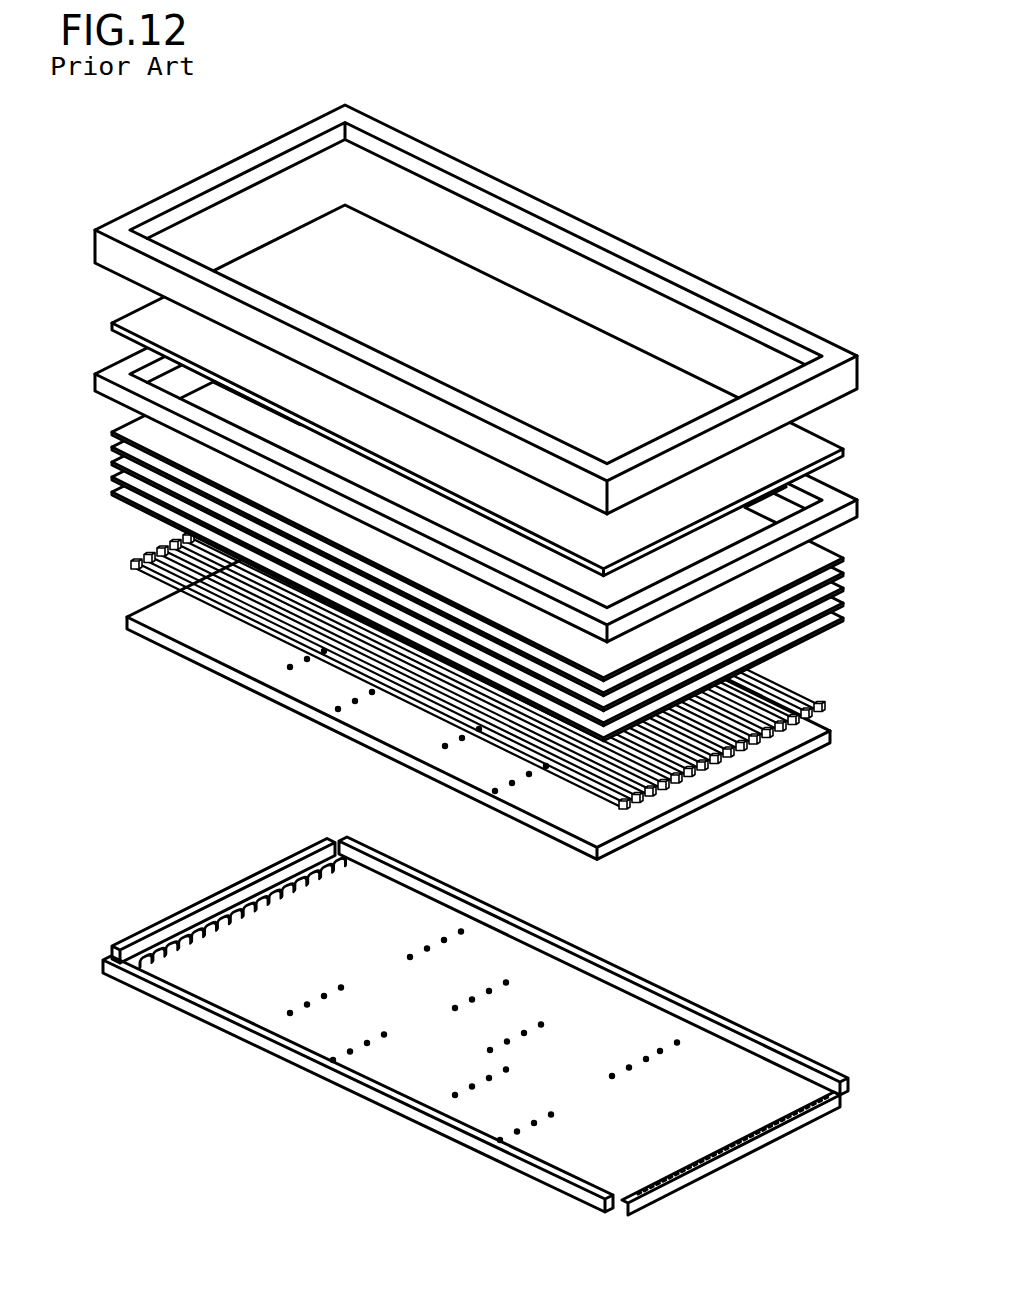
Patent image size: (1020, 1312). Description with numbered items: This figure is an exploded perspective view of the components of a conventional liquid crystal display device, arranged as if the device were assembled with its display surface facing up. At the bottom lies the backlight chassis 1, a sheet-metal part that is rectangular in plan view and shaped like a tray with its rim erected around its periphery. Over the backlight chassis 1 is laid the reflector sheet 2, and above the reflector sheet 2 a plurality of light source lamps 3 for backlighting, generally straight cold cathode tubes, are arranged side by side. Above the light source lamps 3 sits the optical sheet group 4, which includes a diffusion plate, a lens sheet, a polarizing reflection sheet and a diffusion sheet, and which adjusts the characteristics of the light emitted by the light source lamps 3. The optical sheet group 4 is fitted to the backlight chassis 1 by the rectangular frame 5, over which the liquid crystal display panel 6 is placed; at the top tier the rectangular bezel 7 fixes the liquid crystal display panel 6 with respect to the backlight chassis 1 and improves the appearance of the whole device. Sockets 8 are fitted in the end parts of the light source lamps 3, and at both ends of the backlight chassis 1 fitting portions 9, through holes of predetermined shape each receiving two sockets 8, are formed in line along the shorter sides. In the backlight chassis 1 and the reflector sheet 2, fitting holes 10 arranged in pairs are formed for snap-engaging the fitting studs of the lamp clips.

The backlight chassis 1 is at (103, 964).
The reflector sheet 2 is at (127, 622).
The light source lamps 3 is at (160, 589).
The optical sheet group 4 is at (99, 458).
The frame 5 is at (95, 379).
The liquid crystal display panel 6 is at (112, 325).
The bezel 7 is at (95, 240).
The sockets 8 is at (133, 561).
The fitting portions 9 is at (330, 876).
The fitting hole 10 is at (680, 1047).